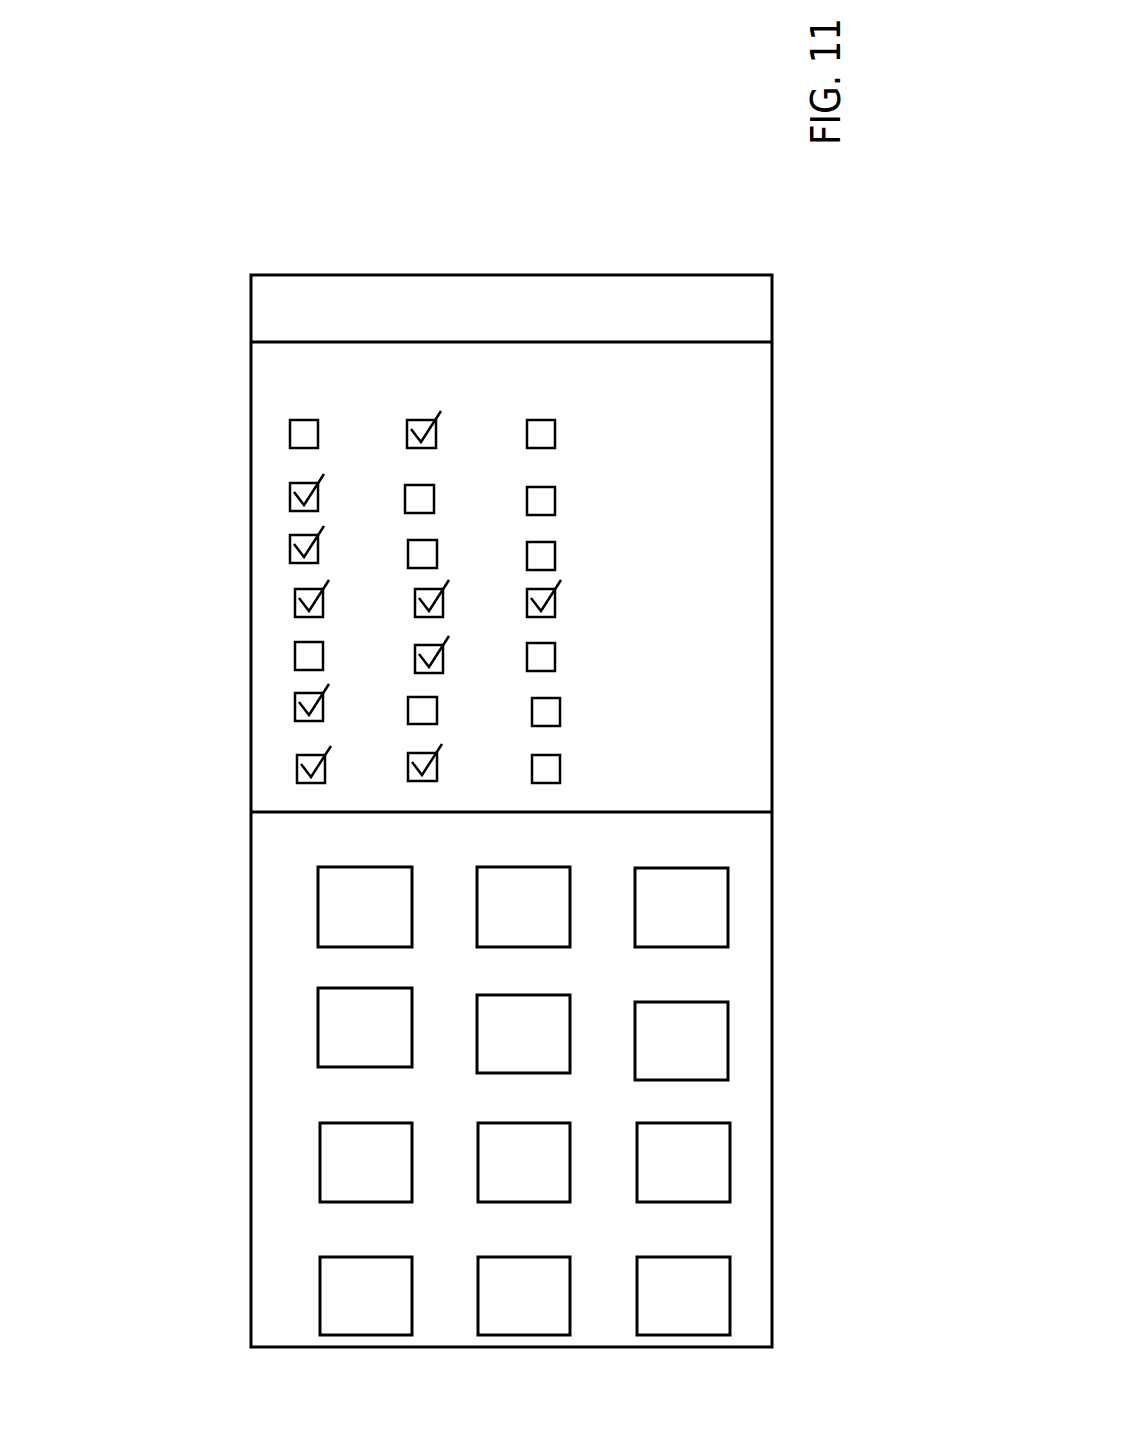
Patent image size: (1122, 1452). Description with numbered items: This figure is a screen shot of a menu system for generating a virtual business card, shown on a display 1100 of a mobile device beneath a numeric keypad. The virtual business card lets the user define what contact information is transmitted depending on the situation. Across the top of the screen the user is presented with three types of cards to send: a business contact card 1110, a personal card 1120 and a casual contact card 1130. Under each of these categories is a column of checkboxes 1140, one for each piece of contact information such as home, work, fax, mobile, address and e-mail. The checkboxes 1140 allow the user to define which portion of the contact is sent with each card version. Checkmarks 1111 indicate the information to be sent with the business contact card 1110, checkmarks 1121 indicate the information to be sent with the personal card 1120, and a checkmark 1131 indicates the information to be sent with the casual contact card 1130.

The display 1100 is at (770, 469).
The business contact card 1110 is at (293, 378).
The checkmarks 1111 is at (295, 607).
The personal card 1120 is at (408, 375).
The checkmarks 1121 is at (437, 432).
The casual contact card 1130 is at (560, 365).
The checkmarks 1131 is at (552, 603).
The checkboxes 1140 is at (290, 434).